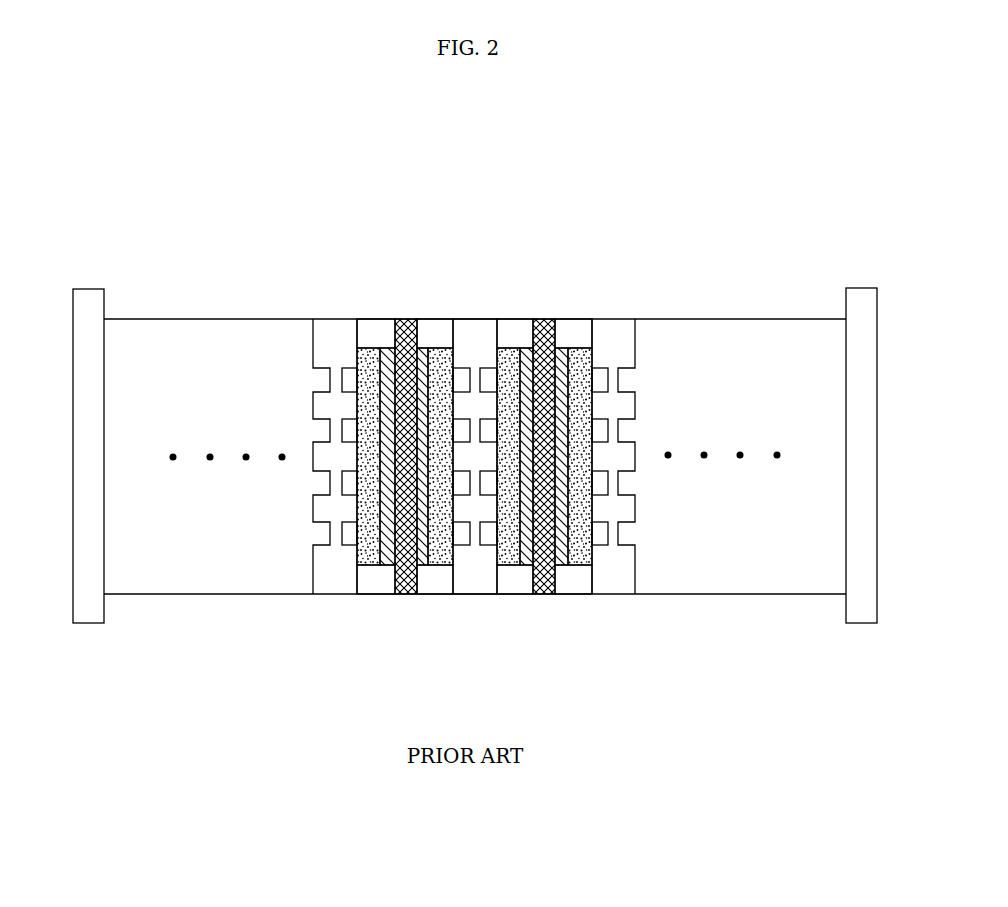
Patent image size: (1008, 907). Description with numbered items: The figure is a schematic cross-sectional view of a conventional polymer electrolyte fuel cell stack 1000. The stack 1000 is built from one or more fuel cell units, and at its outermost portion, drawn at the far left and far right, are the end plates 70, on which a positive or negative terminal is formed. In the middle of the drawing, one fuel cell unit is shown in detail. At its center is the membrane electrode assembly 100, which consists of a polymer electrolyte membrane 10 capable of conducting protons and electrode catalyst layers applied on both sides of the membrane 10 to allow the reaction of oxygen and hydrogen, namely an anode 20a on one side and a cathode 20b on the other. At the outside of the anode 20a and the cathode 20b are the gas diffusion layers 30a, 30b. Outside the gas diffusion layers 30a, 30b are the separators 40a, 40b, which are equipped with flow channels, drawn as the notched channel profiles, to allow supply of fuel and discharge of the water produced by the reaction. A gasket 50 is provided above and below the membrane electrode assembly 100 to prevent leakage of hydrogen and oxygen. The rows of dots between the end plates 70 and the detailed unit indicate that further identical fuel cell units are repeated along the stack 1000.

The polymer electrolyte fuel cell stack 1000 is at (641, 192).
The membrane electrode assembly 100 is at (396, 385).
The polymer electrolyte membrane 10 is at (405, 332).
The anode 20a is at (388, 348).
The cathode 20b is at (424, 345).
The gas diffusion layer 30a is at (358, 322).
The gas diffusion layer 30b is at (455, 322).
The separator 40a is at (334, 582).
The separator 40b is at (481, 582).
The gasket 50 is at (377, 582).
The end plate 70 is at (857, 605).